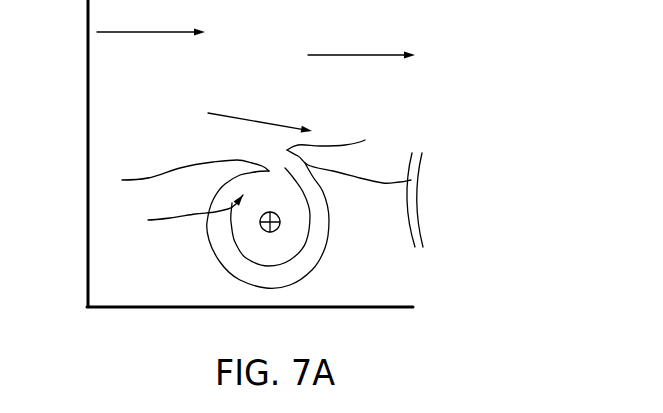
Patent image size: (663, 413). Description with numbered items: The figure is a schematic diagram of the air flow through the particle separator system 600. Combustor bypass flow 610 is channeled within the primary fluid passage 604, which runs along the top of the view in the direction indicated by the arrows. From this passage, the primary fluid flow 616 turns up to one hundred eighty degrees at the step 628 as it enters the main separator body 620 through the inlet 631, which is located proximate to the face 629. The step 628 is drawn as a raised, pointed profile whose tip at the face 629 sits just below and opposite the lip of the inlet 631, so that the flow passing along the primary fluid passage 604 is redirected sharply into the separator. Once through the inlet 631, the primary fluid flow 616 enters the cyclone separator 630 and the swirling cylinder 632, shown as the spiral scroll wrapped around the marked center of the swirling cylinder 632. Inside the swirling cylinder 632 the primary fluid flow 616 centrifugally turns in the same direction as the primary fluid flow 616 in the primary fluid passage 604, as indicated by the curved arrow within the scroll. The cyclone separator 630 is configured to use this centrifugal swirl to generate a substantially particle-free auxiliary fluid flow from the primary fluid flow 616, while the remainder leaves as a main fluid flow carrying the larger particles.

The particle separator system 600 is at (480, 125).
The primary fluid passage 604 is at (361, 42).
The combustor bypass flow 610 is at (151, 18).
The primary fluid flow 616 is at (211, 165).
The main separator body 620 is at (148, 177).
The step 628 is at (237, 159).
The face 629 is at (258, 165).
The cyclone separator 630 is at (323, 253).
The inlet 631 is at (365, 140).
The swirling cylinder 632 is at (261, 227).